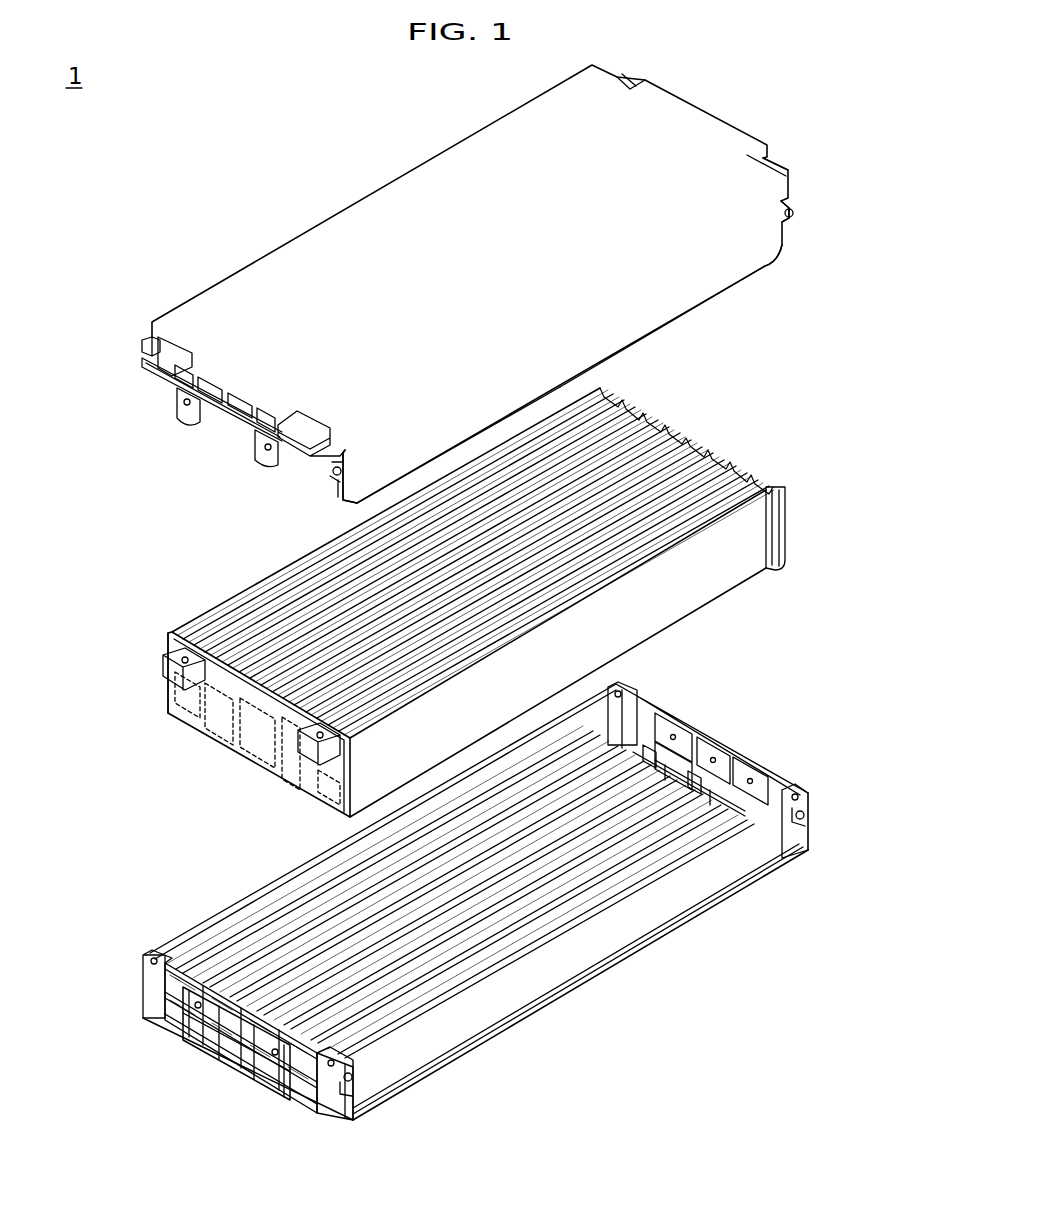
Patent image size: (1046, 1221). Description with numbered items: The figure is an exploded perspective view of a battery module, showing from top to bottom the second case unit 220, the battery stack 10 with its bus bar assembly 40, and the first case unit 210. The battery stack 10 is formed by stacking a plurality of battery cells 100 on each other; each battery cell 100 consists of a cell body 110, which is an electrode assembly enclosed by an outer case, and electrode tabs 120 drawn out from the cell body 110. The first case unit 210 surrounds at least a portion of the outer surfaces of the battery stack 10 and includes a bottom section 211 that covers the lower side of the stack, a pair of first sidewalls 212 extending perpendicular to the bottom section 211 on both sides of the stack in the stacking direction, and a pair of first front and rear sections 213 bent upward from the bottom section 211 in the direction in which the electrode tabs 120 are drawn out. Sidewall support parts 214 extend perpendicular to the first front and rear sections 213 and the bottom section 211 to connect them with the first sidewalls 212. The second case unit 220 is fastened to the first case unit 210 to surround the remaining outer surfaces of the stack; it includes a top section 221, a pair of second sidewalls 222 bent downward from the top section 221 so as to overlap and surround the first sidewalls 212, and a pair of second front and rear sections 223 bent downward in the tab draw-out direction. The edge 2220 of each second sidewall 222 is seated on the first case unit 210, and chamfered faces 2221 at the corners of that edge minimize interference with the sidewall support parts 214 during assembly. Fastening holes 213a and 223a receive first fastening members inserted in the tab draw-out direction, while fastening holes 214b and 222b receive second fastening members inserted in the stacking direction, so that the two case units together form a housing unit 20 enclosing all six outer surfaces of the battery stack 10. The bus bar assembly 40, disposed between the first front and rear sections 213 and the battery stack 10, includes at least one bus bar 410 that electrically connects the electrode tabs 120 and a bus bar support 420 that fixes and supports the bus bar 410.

The battery stack 10 is at (700, 462).
The housing unit 20 is at (102, 500).
The bus bar assembly 40 is at (275, 816).
The battery cell 100 is at (798, 672).
The cell body 110 is at (685, 598).
The electrode tab 120 is at (786, 560).
The first case unit 210 is at (220, 880).
The bottom section 211 is at (425, 985).
The first sidewall 212 is at (185, 957).
The first front and rear section 213 is at (775, 783).
The fastening hole 213a is at (175, 1030).
The sidewall support part 214 is at (338, 1114).
The fastening hole 214b is at (360, 1078).
The second case unit 220 is at (215, 462).
The top section 221 is at (700, 160).
The second sidewall 222 is at (703, 283).
The fastening hole 222b is at (793, 220).
The edge of second sidewall 2220 is at (648, 338).
The chamfered face 2221 is at (348, 500).
The second front and rear section 223 is at (245, 408).
The fastening hole 223a is at (263, 445).
The bus bar 410 is at (278, 752).
The bus bar support 420 is at (238, 742).